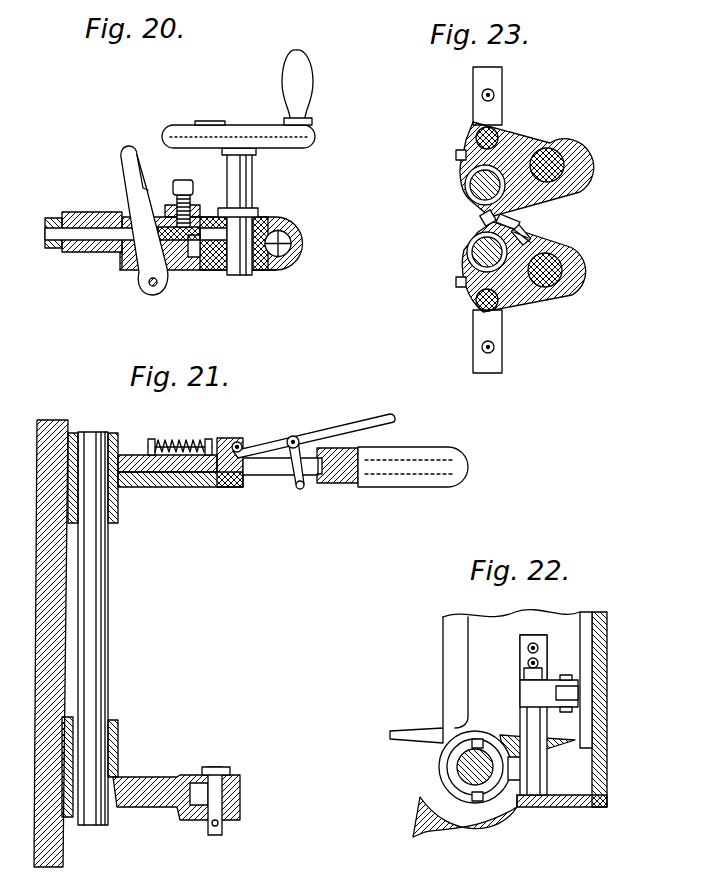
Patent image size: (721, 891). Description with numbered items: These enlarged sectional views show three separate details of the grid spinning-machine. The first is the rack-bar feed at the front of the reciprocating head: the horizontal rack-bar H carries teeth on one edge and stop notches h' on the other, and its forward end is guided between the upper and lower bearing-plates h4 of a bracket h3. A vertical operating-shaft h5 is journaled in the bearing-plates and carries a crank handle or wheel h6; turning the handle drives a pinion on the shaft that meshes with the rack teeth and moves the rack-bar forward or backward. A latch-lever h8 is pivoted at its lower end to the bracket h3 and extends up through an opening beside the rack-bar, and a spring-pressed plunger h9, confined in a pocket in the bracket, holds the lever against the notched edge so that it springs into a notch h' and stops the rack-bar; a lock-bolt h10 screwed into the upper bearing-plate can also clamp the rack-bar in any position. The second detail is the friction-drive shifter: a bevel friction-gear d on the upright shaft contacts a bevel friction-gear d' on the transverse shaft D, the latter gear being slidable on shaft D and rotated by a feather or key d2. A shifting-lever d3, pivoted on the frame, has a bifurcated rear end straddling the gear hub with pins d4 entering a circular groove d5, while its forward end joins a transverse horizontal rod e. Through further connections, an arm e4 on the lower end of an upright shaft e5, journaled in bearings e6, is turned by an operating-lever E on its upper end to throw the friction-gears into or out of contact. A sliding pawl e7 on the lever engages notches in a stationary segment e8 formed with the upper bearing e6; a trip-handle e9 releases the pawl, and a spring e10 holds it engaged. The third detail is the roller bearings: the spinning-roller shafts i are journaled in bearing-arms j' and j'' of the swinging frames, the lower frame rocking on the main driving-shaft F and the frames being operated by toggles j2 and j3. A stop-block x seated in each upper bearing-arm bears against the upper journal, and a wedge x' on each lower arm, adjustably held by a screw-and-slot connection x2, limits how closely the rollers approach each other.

In FIG. 20, the rack-bar H is at (190, 270).
In FIG. 20, the stop notches h' is at (295, 243).
In FIG. 20, the bracket h3 is at (83, 249).
In FIG. 20, the bearing-plates h4 is at (271, 285).
In FIG. 20, the operating-shaft h5 is at (253, 190).
In FIG. 20, the crank handle or wheel h6 is at (238, 99).
In FIG. 20, the latch-lever h8 is at (129, 220).
In FIG. 20, the spring-pressed plunger h9 is at (118, 212).
In FIG. 20, the lock-bolt h10 is at (183, 192).
In FIG. 23, the main driving-shaft F is at (572, 318).
In FIG. 23, the roller shaft i is at (470, 186).
In FIG. 23, the bearing-arms j' is at (525, 221).
In FIG. 23, the roller j'' is at (505, 124).
In FIG. 23, the lower toggles j2 is at (503, 372).
In FIG. 23, the upper toggles j3 is at (503, 90).
In FIG. 23, the stop-block x is at (464, 213).
In FIG. 23, the wedge x' is at (525, 215).
In FIG. 23, the screw-and-slot connection x2 is at (534, 236).
In FIG. 21, the operating-lever E is at (392, 514).
In FIG. 21, the arm e4 is at (176, 797).
In FIG. 21, the upright shaft e5 is at (93, 652).
In FIG. 21, the bearings e6 is at (118, 521).
In FIG. 21, the sliding pawl e7 is at (237, 473).
In FIG. 21, the stationary segment e8 is at (180, 481).
In FIG. 21, the trip-handle e9 is at (313, 445).
In FIG. 21, the spring e10 is at (180, 437).
In FIG. 22, the transverse shaft D is at (486, 786).
In FIG. 22, the bevel friction-gear d is at (416, 724).
In FIG. 22, the bevel friction-gear d' is at (460, 767).
In FIG. 22, the feather or key d2 is at (470, 742).
In FIG. 22, the lever d3 is at (556, 770).
In FIG. 22, the pins d4 is at (478, 740).
In FIG. 22, the circular groove d5 is at (456, 784).
In FIG. 22, the transverse horizontal rod e is at (578, 693).